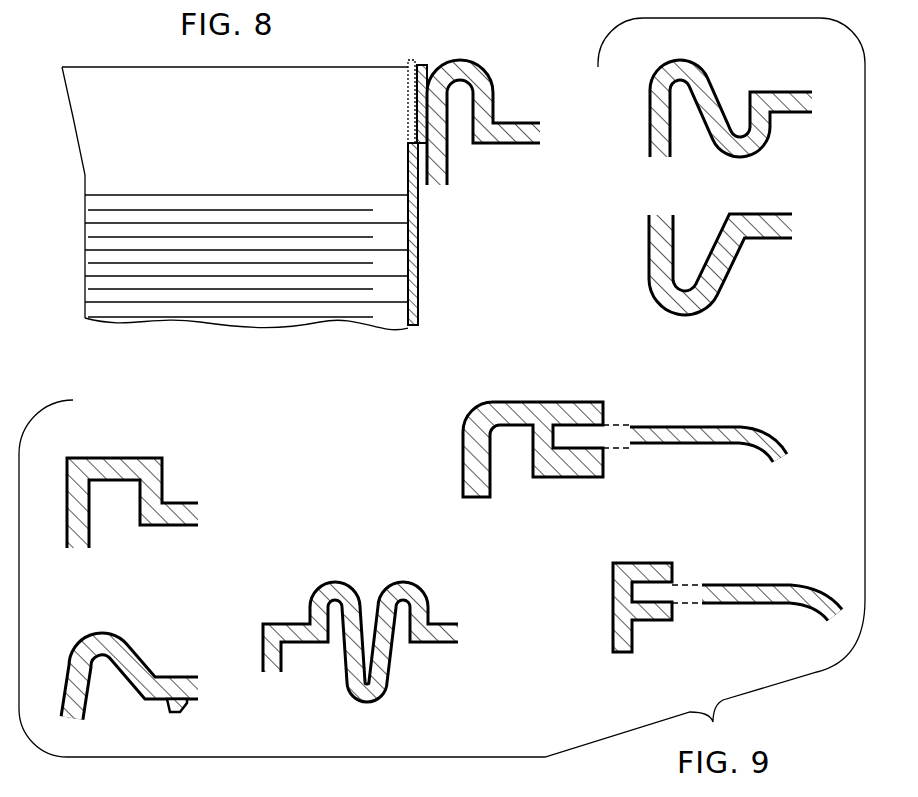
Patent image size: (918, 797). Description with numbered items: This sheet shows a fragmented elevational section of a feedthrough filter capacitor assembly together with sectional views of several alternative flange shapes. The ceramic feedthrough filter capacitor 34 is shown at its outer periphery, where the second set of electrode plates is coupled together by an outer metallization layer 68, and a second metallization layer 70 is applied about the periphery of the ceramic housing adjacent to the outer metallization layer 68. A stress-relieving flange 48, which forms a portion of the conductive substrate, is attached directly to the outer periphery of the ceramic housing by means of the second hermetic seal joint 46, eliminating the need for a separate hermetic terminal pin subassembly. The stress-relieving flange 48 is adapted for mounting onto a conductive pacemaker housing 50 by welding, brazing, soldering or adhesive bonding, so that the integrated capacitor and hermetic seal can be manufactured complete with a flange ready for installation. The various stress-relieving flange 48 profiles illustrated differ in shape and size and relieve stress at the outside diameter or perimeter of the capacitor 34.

In FIG. 8, the ceramic feedthrough filter capacitor 34 is at (133, 58).
In FIG. 8, the second metallization layer 70 is at (418, 64).
In FIG. 8, the second hermetic seal joint 46 is at (438, 45).
In FIG. 8, the outer metallization layer 68 is at (419, 292).
In FIG. 8, the stress-relieving flange 48 is at (477, 64).
In FIG. 9, the stress-relieving flange 48 is at (707, 73).
In FIG. 9, the conductive pacemaker housing 50 is at (710, 426).